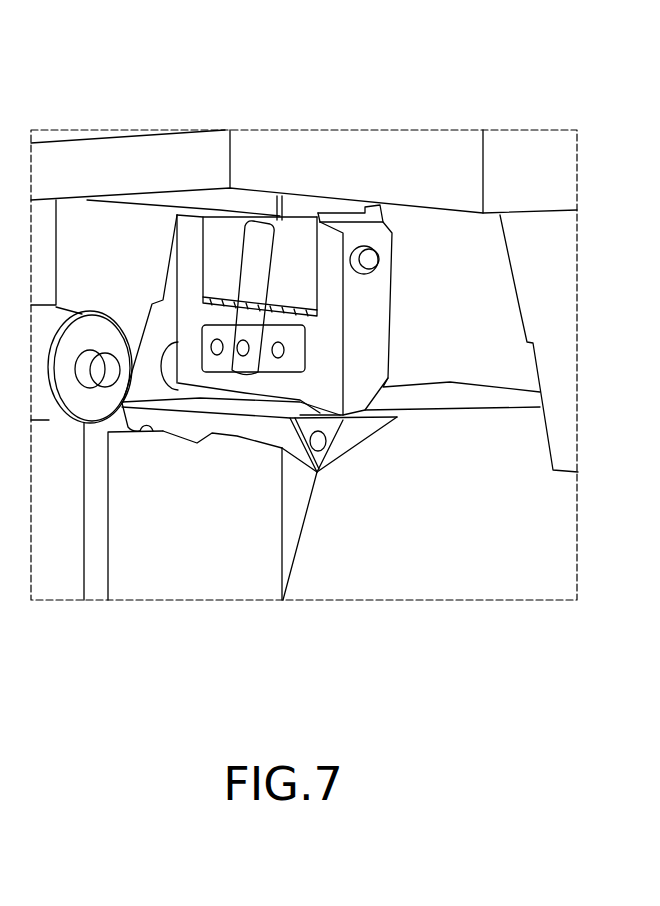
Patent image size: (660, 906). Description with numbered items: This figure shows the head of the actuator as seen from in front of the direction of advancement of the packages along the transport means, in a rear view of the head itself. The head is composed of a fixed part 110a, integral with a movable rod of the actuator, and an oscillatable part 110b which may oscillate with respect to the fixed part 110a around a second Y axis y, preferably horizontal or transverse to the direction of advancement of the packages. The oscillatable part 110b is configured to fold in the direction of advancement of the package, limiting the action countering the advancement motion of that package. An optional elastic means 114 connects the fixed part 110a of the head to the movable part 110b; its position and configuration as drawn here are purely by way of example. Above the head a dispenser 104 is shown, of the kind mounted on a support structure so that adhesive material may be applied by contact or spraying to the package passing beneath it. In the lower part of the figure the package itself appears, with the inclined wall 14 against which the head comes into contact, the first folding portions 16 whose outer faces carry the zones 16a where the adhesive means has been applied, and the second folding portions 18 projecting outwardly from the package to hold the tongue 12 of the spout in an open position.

The dispenser 104 is at (550, 260).
The fixed part 110a is at (303, 252).
The oscillatable part 110b is at (363, 352).
The elastic means 114 is at (253, 275).
The second Y axis y is at (372, 263).
The tongue 12 is at (185, 560).
The inclined wall 14 is at (173, 428).
The first folding portions 16 is at (333, 427).
The zones 16a is at (333, 427).
The second folding portions 18 is at (288, 527).